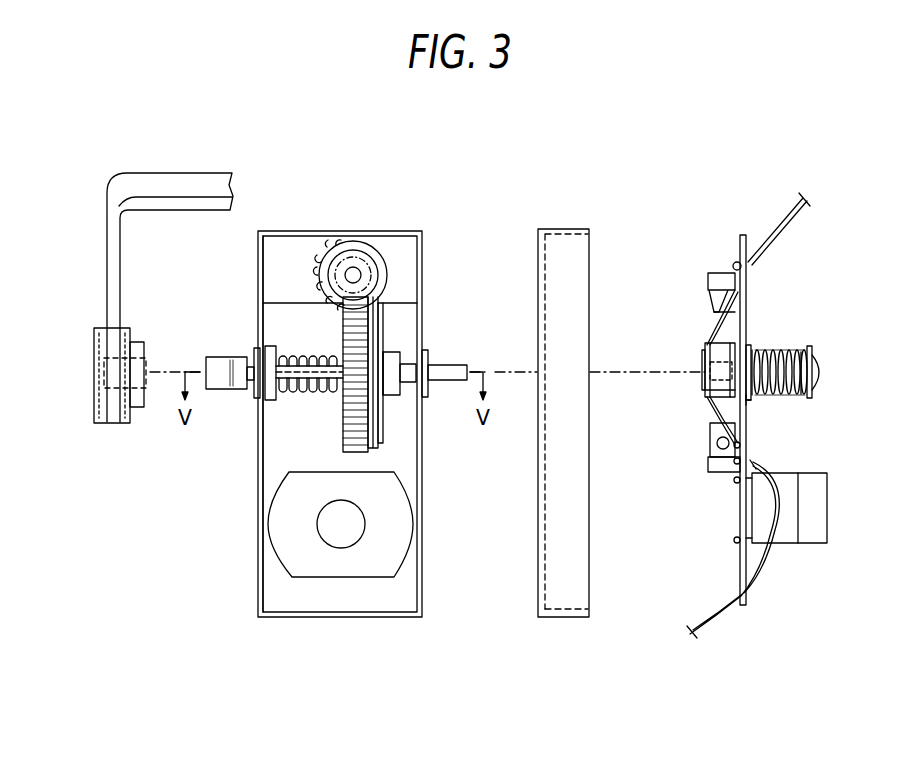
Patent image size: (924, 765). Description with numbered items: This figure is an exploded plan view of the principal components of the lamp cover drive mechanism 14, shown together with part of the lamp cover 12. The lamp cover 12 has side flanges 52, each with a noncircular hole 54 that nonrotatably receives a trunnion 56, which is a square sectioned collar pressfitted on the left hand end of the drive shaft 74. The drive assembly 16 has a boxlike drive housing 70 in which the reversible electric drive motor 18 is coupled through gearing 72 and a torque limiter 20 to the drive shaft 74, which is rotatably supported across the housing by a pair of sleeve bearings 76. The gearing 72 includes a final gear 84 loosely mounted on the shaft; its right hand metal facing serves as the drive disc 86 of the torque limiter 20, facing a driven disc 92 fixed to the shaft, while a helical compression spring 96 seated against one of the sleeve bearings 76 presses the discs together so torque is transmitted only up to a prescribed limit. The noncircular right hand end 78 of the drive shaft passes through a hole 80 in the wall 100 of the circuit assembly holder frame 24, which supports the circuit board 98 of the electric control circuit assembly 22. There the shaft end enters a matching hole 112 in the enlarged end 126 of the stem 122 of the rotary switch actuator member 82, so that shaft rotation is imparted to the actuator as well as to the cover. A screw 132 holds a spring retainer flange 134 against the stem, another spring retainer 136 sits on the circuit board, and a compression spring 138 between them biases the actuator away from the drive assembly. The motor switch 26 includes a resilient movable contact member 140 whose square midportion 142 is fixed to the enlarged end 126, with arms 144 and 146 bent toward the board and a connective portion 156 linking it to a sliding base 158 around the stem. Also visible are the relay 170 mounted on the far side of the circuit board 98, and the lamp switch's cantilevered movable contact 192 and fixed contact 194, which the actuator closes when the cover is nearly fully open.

The lamp cover 12 is at (149, 168).
The lamp cover drive mechanism 14 is at (703, 126).
The drive assembly 16 is at (416, 230).
The reversible electric drive motor 18 is at (400, 553).
The torque limiter 20 is at (415, 335).
The electric control circuit assembly 22 is at (834, 226).
The circuit assembly holder frame 24 is at (568, 222).
The motor switch 26 is at (676, 268).
The side flanges 52 is at (105, 258).
The holes 54 is at (145, 400).
The trunnion 56 is at (216, 357).
The drive housing 70 is at (292, 230).
The gearing 72 is at (353, 238).
The drive shaft 74 is at (395, 398).
The sleeve bearings 76 is at (256, 398).
The right hand end of drive shaft 78 is at (443, 372).
The hole 80 is at (541, 392).
The rotary switch actuator member 82 is at (800, 346).
The final gear 84 is at (343, 330).
The drive disc 86 is at (385, 285).
The driven disc 92 is at (388, 310).
The helical compression spring 96 is at (312, 393).
The circuit board 98 is at (742, 248).
The wall 100 is at (560, 565).
The hole 112 is at (700, 374).
The stem 122 is at (803, 395).
The enlarged end of stem 126 is at (700, 352).
The screw 132 is at (822, 378).
The spring retainer flange 134 is at (812, 352).
The spring retainer 136 is at (746, 345).
The compression spring 138 is at (790, 348).
The movable contact member 140 is at (700, 328).
The midportion 142 is at (710, 404).
The arm 144 is at (706, 308).
The arm 146 is at (716, 430).
The connective portion 156 is at (705, 394).
The sliding base 158 is at (752, 405).
The relay 170 is at (828, 528).
The movable contact 192 is at (720, 272).
The fixed contact 194 is at (708, 465).